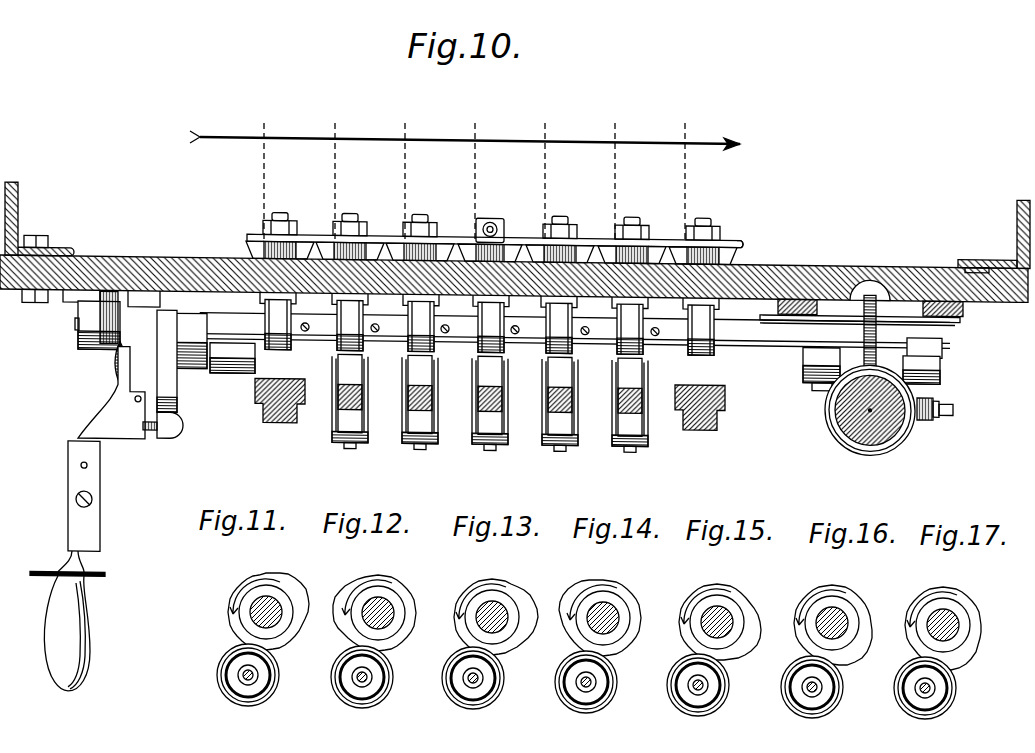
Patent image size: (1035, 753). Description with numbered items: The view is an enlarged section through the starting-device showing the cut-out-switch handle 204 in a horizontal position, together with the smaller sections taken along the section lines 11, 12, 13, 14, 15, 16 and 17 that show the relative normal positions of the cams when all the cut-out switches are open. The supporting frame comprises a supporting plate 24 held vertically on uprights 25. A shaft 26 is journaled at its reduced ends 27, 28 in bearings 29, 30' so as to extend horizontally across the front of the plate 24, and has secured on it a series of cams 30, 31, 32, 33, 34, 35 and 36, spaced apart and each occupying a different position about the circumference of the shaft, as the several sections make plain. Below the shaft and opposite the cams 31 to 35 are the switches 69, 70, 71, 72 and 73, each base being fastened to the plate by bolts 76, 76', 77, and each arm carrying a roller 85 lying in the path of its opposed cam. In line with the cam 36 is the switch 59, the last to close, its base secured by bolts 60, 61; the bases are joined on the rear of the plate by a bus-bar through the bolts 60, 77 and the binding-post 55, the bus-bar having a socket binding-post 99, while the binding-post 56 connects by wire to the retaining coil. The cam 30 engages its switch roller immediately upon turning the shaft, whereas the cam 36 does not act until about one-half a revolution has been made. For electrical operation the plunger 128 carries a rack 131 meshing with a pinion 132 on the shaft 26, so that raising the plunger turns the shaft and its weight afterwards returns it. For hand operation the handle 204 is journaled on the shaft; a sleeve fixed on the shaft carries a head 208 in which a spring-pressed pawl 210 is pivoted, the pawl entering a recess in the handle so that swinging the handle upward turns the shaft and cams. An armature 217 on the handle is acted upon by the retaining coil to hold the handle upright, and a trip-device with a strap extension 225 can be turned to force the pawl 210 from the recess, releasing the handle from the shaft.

In FIG. 10, the section line 11 is at (263, 173).
In FIG. 10, the section line 12 is at (334, 173).
In FIG. 10, the section line 13 is at (404, 173).
In FIG. 10, the section line 14 is at (474, 173).
In FIG. 10, the section line 15 is at (544, 173).
In FIG. 10, the section line 16 is at (614, 173).
In FIG. 10, the section line 17 is at (684, 173).
In FIG. 10, the supporting plate 24 is at (820, 261).
In FIG. 10, the uprights 25 is at (18, 212).
In FIG. 10, the shaft 26 is at (218, 320).
In FIG. 11, the shaft 26 is at (280, 608).
In FIG. 12, the shaft 26 is at (363, 609).
In FIG. 13, the shaft 26 is at (507, 606).
In FIG. 14, the shaft 26 is at (592, 609).
In FIG. 15, the shaft 26 is at (733, 614).
In FIG. 16, the shaft 26 is at (818, 613).
In FIG. 17, the shaft 26 is at (930, 622).
In FIG. 10, the reduced end of shaft 27 is at (76, 326).
In FIG. 10, the reduced end of shaft 28 is at (942, 334).
In FIG. 10, the bearing 29 is at (85, 349).
In FIG. 10, the cam 30 is at (257, 361).
In FIG. 11, the cam 30 is at (268, 593).
In FIG. 10, the bearing 30' is at (877, 318).
In FIG. 10, the cam 31 is at (350, 349).
In FIG. 12, the cam 31 is at (380, 578).
In FIG. 10, the cam 32 is at (420, 347).
In FIG. 13, the cam 32 is at (490, 579).
In FIG. 10, the cam 33 is at (492, 347).
In FIG. 14, the cam 33 is at (602, 582).
In FIG. 10, the cam 34 is at (560, 346).
In FIG. 15, the cam 34 is at (712, 584).
In FIG. 10, the cam 35 is at (632, 345).
In FIG. 16, the cam 35 is at (838, 586).
In FIG. 10, the cam 36 is at (700, 344).
In FIG. 17, the cam 36 is at (950, 590).
In FIG. 10, the binding-post 55 is at (283, 210).
In FIG. 10, the binding-post 56 is at (247, 235).
In FIG. 10, the switch 59 is at (722, 402).
In FIG. 10, the bolt 60 is at (745, 236).
In FIG. 10, the bolt 61 is at (710, 214).
In FIG. 10, the switch 69 is at (346, 437).
In FIG. 10, the switch 70 is at (418, 436).
In FIG. 10, the switch 71 is at (490, 436).
In FIG. 10, the switch 72 is at (560, 435).
In FIG. 10, the switch 73 is at (630, 434).
In FIG. 10, the bolt 76 is at (420, 232).
In FIG. 10, the foot block 76' is at (659, 235).
In FIG. 10, the bolt 77 is at (358, 211).
In FIG. 11, the roller 85 is at (277, 677).
In FIG. 12, the roller 85 is at (333, 677).
In FIG. 13, the roller 85 is at (503, 682).
In FIG. 14, the roller 85 is at (556, 682).
In FIG. 15, the roller 85 is at (729, 688).
In FIG. 16, the roller 85 is at (782, 688).
In FIG. 17, the roller 85 is at (895, 690).
In FIG. 10, the socket binding-post 99 is at (485, 210).
In FIG. 10, the plunger 128 is at (888, 415).
In FIG. 10, the rack 131 is at (850, 375).
In FIG. 10, the pinion 132 is at (874, 280).
In FIG. 10, the handle 204 is at (58, 549).
In FIG. 10, the head 208 is at (181, 431).
In FIG. 10, the pawl 210 is at (152, 429).
In FIG. 10, the armature 217 is at (100, 505).
In FIG. 10, the strap extension 225 is at (120, 302).